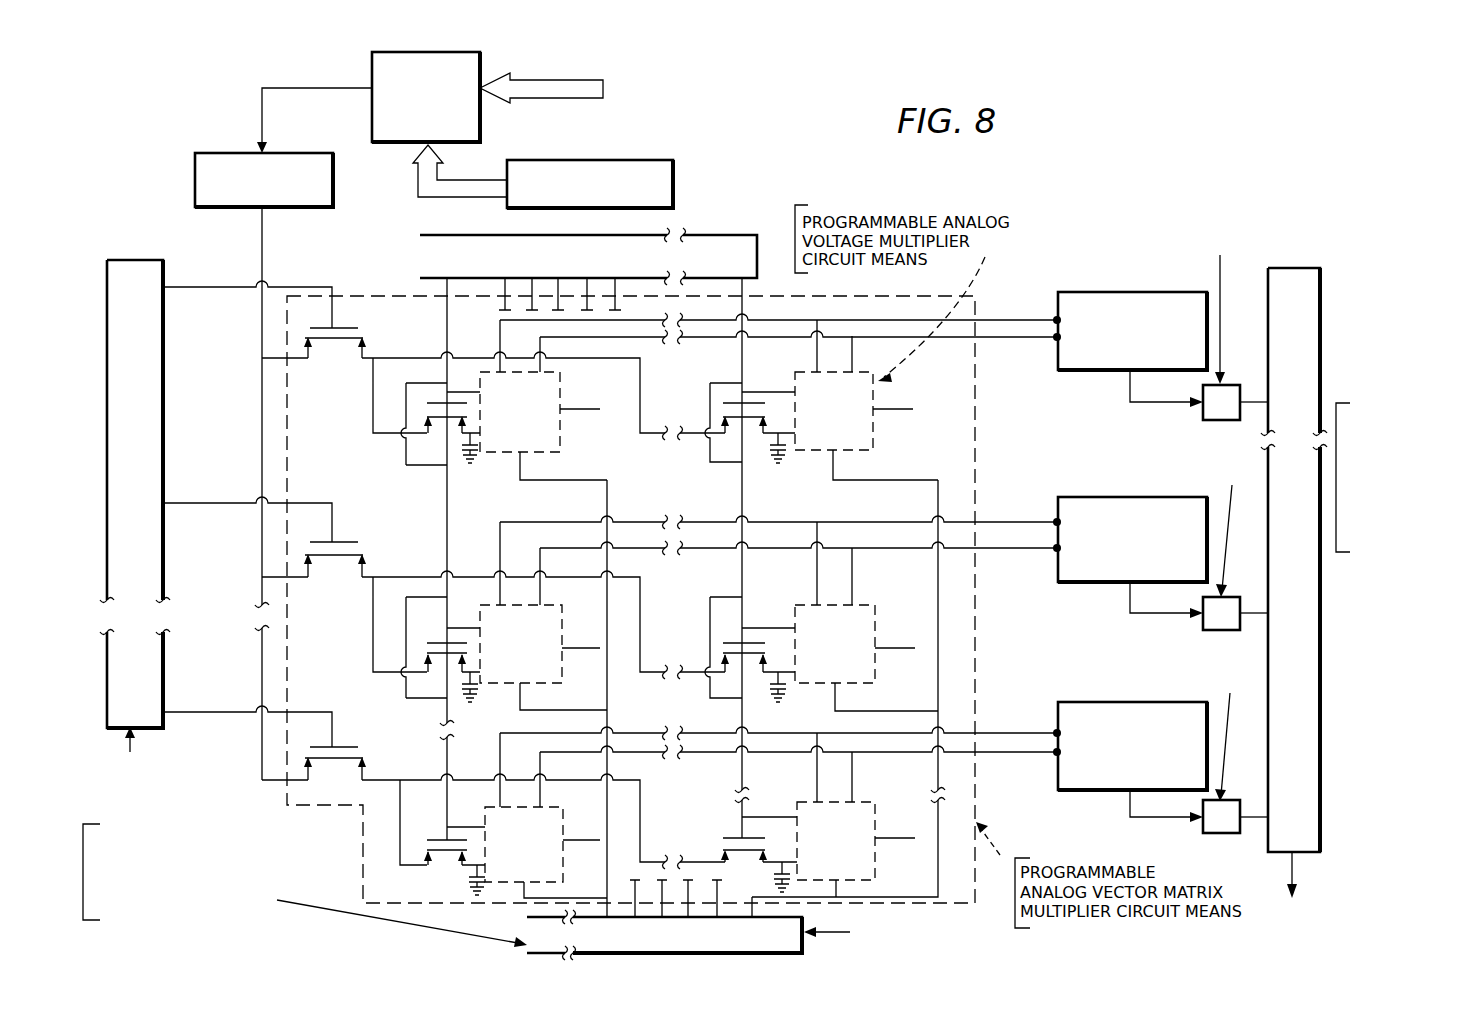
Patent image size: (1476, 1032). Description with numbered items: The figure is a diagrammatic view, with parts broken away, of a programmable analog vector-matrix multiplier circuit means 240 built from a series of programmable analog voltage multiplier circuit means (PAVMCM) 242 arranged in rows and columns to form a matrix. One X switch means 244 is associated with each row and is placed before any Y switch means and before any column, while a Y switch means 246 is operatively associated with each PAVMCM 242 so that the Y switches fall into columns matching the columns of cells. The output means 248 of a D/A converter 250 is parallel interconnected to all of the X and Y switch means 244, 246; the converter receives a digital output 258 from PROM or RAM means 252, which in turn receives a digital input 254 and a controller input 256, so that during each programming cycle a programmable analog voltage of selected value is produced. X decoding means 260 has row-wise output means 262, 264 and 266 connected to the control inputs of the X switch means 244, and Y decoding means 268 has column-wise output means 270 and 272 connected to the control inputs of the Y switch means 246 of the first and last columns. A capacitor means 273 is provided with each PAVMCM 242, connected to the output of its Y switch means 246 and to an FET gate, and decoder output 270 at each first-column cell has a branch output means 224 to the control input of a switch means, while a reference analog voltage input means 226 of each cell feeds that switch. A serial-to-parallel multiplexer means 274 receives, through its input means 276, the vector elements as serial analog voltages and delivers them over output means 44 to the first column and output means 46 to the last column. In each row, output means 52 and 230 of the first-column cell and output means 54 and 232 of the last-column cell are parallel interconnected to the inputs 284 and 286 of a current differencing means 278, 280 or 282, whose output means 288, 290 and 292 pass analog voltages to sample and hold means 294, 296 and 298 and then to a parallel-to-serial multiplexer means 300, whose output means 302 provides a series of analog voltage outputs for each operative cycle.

The output means 44 is at (607, 905).
The output means 46 is at (755, 912).
The output means 52 is at (500, 356).
The output means 54 is at (817, 368).
The branch output means 224 is at (463, 392).
The reference analog voltage input means 226 is at (583, 409).
The output means 230 is at (540, 350).
The output means 232 is at (852, 355).
The programmable analog vector-matrix multiplier circuit means 240 is at (982, 686).
The programmable analog voltage multiplier circuit means (PAVMCM) 242 is at (677, 627).
The X switch means 244 is at (398, 320).
The Y switch means 246 is at (424, 422).
The output means 248 is at (262, 252).
The D/A converter 250 is at (333, 185).
The PROM or RAM means 252 is at (480, 62).
The digital input 254 is at (580, 102).
The controller input 256 is at (486, 180).
The digital output 258 is at (296, 88).
The X decoding means 260 is at (163, 408).
The output means 262 is at (205, 287).
The output means 264 is at (198, 503).
The output means 266 is at (200, 712).
The Y decoding means 268 is at (712, 235).
The output means 270 is at (447, 330).
The output means 272 is at (742, 300).
The capacitor means 273 is at (462, 447).
The serial-to-parallel multiplexer means 274 is at (442, 892).
The input means 276 is at (830, 932).
The current differencing means 278 is at (1132, 331).
The current differencing means 280 is at (1132, 539).
The current differencing means 282 is at (1132, 746).
The input 284 is at (1055, 318).
The input 286 is at (1055, 338).
The output means 288 is at (1130, 398).
The output means 290 is at (1130, 608).
The output means 292 is at (1130, 818).
The sample and hold means 294 is at (1221, 420).
The sample and hold means 296 is at (1222, 630).
The sample and hold means 298 is at (1226, 833).
The parallel-to-serial multiplexer means 300 is at (1322, 800).
The output means 302 is at (1292, 875).